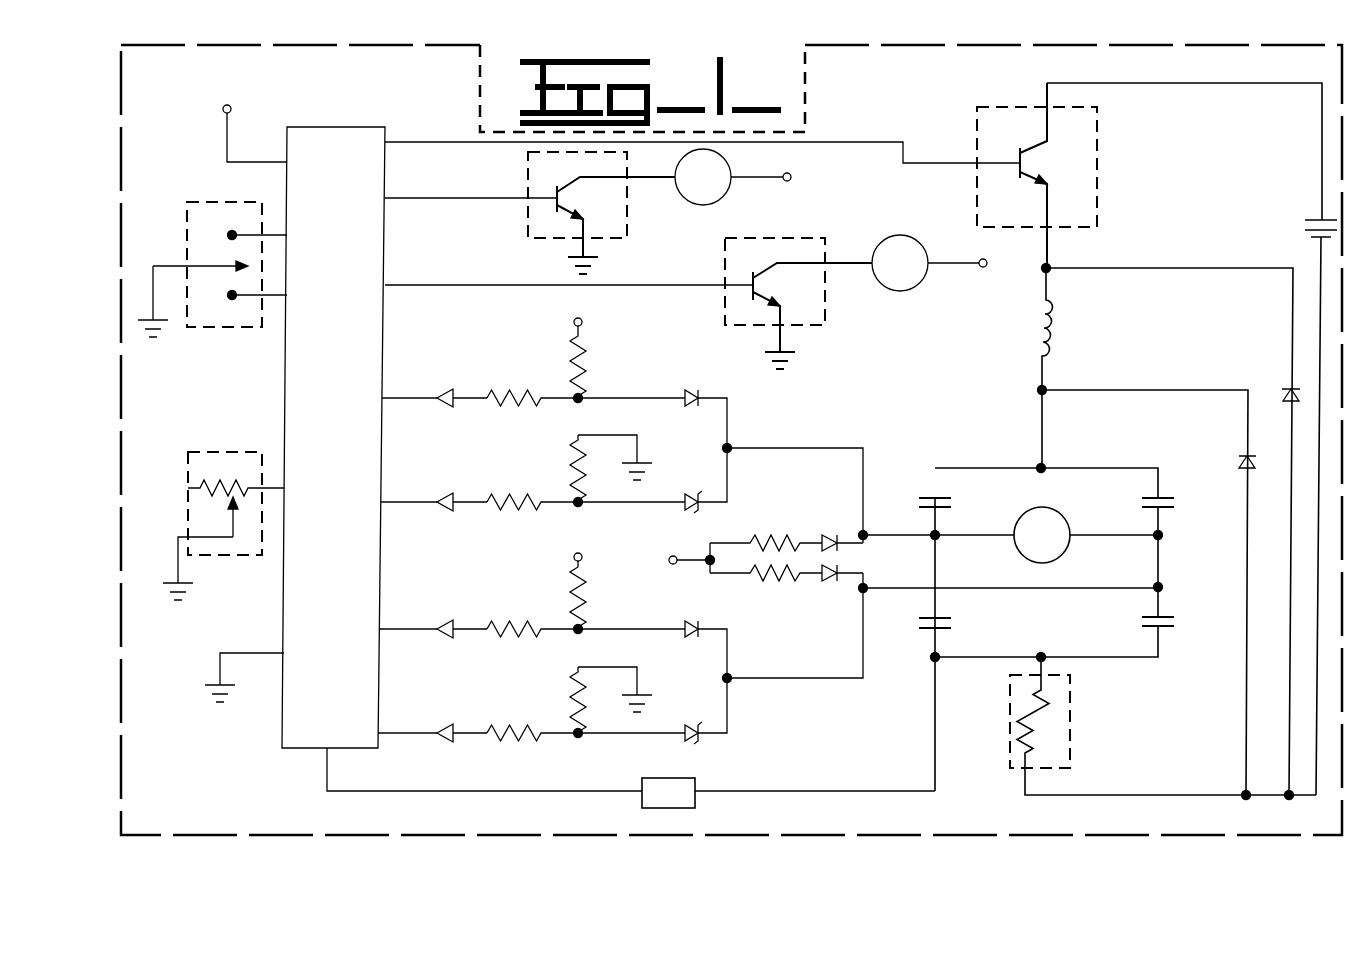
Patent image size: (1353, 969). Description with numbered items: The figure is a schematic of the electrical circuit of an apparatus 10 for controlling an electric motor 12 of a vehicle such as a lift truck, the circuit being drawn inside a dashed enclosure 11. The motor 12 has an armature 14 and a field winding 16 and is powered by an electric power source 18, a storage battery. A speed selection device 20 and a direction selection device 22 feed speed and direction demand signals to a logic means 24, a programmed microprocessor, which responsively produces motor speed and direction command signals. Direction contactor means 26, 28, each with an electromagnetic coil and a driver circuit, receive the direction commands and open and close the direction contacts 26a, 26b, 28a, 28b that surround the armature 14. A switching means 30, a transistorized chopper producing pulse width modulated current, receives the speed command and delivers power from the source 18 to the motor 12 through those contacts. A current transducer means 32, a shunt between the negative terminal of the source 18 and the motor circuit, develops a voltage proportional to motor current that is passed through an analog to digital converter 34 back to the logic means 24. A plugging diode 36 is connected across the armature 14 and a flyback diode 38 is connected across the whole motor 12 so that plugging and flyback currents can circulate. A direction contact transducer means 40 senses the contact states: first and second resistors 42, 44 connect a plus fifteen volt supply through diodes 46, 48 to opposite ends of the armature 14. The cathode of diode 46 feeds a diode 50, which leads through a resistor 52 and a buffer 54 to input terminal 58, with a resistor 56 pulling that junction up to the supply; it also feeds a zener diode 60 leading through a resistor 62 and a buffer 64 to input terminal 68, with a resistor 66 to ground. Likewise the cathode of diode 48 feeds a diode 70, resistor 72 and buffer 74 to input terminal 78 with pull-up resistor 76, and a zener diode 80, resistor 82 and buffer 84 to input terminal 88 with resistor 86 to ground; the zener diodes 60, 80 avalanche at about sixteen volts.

The apparatus 10 is at (835, 107).
The housing 11 is at (393, 47).
The electric motor 12 is at (968, 457).
The armature winding 14 is at (1045, 508).
The field winding 16 is at (1037, 303).
The electric power source 18 is at (1318, 218).
The speed selection device 20 is at (188, 497).
The direction selection device 22 is at (187, 247).
The logic means 24 is at (323, 127).
The direction contactor means 26 is at (652, 193).
The direction contact 26a is at (927, 491).
The direction contact 26b is at (1167, 615).
The direction contactor means 28 is at (842, 248).
The direction contact 28a is at (1167, 497).
The direction contact 28b is at (927, 613).
The switching means 30 is at (1097, 172).
The current transducer means 32 is at (1072, 706).
The analog to digital converter 34 is at (662, 808).
The plugging diode 36 is at (1245, 455).
The flyback diode 38 is at (1285, 390).
The direction contact transducer means 40 is at (838, 377).
The first resistor 42 is at (798, 532).
The second resistor 44 is at (759, 590).
The diode 46 is at (816, 530).
The diode 48 is at (822, 582).
The diode 50 is at (675, 392).
The resistor 52 is at (522, 393).
The buffer 54 is at (440, 395).
The resistor 56 is at (583, 365).
The input terminal 58 is at (409, 385).
The zener diode 60 is at (675, 498).
The resistor 62 is at (522, 497).
The buffer 64 is at (440, 498).
The resistor 66 is at (583, 467).
The input terminal 68 is at (409, 489).
The diode 70 is at (675, 625).
The resistor 72 is at (522, 625).
The buffer 74 is at (440, 627).
The resistor 76 is at (583, 593).
The input terminal 78 is at (408, 615).
The zener diode 80 is at (675, 730).
The resistor 82 is at (522, 730).
The buffer 84 is at (440, 730).
The resistor 86 is at (583, 699).
The input terminal 88 is at (407, 719).